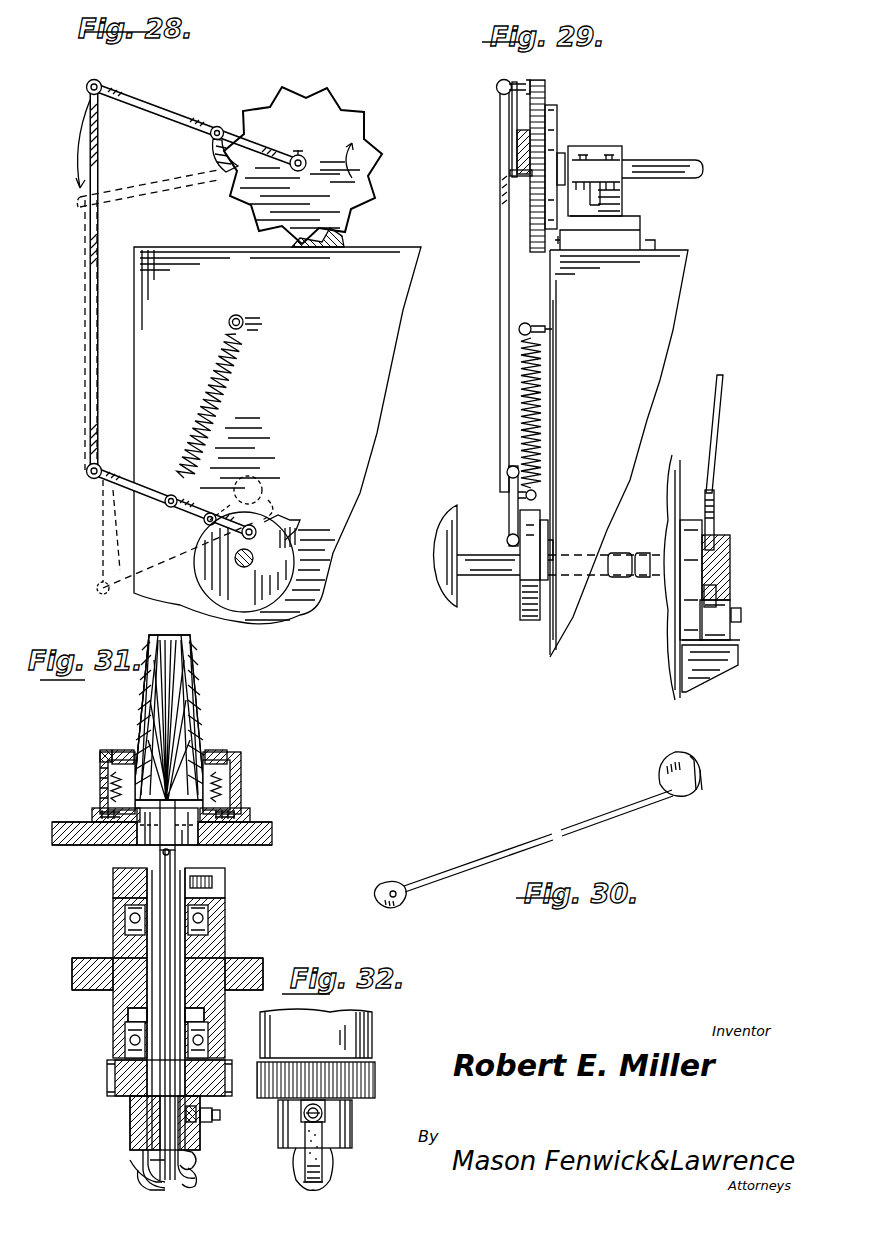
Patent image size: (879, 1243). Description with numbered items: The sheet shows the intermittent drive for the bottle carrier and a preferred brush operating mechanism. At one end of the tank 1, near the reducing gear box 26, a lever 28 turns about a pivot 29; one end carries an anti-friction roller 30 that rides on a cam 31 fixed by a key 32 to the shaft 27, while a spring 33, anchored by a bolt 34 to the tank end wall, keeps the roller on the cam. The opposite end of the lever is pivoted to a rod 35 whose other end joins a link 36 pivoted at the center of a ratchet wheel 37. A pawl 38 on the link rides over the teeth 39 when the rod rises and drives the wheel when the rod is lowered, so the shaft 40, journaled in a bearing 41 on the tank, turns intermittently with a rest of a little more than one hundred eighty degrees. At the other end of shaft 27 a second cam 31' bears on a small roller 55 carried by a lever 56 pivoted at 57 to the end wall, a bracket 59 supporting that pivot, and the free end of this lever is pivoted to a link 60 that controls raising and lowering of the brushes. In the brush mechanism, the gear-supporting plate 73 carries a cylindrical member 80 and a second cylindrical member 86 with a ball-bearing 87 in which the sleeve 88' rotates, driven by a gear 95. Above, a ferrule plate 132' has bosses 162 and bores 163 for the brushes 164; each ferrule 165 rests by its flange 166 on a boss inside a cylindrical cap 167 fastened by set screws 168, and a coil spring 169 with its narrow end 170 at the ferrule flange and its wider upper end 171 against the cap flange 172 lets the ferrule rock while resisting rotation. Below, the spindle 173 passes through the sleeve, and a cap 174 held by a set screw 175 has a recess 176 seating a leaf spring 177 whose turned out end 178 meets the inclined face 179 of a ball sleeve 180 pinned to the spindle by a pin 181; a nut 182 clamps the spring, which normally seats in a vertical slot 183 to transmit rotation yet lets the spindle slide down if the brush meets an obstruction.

In FIG. 28, the tank 1 is at (204, 250).
In FIG. 29, the tank 1 is at (682, 255).
In FIG. 29, the box 26 is at (446, 518).
In FIG. 28, the shaft 27 is at (235, 560).
In FIG. 29, the shaft 27 is at (488, 578).
In FIG. 30, the shaft 27 is at (494, 854).
In FIG. 28, the lever 28 is at (132, 487).
In FIG. 29, the lever 28 is at (508, 495).
In FIG. 28, the pivot 29 is at (214, 513).
In FIG. 28, the anti-friction roller 30 is at (264, 488).
In FIG. 28, the cam 31 is at (298, 522).
In FIG. 29, the cam 31 is at (523, 576).
In FIG. 30, the cam 31 is at (387, 882).
In FIG. 29, the cam 31' is at (712, 577).
In FIG. 30, the cam 31' is at (687, 754).
In FIG. 28, the key 32 is at (236, 578).
In FIG. 28, the spring 33 is at (207, 386).
In FIG. 29, the spring 33 is at (545, 383).
In FIG. 28, the bolt 34 is at (229, 324).
In FIG. 29, the bolt 34 is at (528, 323).
In FIG. 28, the rod 35 is at (93, 301).
In FIG. 29, the rod 35 is at (500, 205).
In FIG. 28, the link 36 is at (198, 112).
In FIG. 29, the link 36 is at (520, 82).
In FIG. 28, the ratchet wheel 37 is at (346, 115).
In FIG. 29, the ratchet wheel 37 is at (548, 90).
In FIG. 28, the pawl 38 is at (215, 160).
In FIG. 29, the pawl 38 is at (518, 153).
In FIG. 28, the teeth 39 is at (367, 150).
In FIG. 29, the shaft 40 is at (672, 163).
In FIG. 28, the bearing 41 is at (349, 244).
In FIG. 29, the bearing 41 is at (598, 168).
In FIG. 29, the small roller 55 is at (731, 608).
In FIG. 29, the lever 56 is at (717, 590).
In FIG. 29, the pivot 57 is at (742, 618).
In FIG. 29, the bracket 59 is at (739, 656).
In FIG. 29, the link 60 is at (715, 442).
In FIG. 31, the gear-supporting plate 73 is at (85, 962).
In FIG. 31, the cylindrical member 80 is at (114, 920).
In FIG. 31, the second cylindrical member 86 is at (113, 1002).
In FIG. 32, the second cylindrical member 86 is at (372, 1025).
In FIG. 31, the ball-bearing 87 is at (126, 1044).
In FIG. 31, the sleeve 88' is at (138, 1106).
In FIG. 31, the gear 95 is at (115, 1078).
In FIG. 32, the gear 95 is at (375, 1068).
In FIG. 31, the ferrule plate 132' is at (183, 834).
In FIG. 31, the cylindrical boss 162 is at (102, 814).
In FIG. 31, the bore 163 is at (183, 840).
In FIG. 31, the brush 164 is at (180, 708).
In FIG. 31, the ferrule 165 is at (144, 702).
In FIG. 31, the flange 166 is at (210, 754).
In FIG. 31, the cylindrical cap 167 is at (241, 786).
In FIG. 31, the set screw 168 is at (222, 822).
In FIG. 31, the coil spring 169 is at (230, 775).
In FIG. 31, the narrow end 170 is at (108, 782).
In FIG. 31, the wider upper end 171 is at (102, 764).
In FIG. 31, the flange 172 is at (112, 756).
In FIG. 31, the spindle 173 is at (160, 853).
In FIG. 31, the cap 174 is at (130, 1120).
In FIG. 32, the cap 174 is at (350, 1114).
In FIG. 31, the set screw 175 is at (213, 1114).
In FIG. 32, the set screw 175 is at (322, 1118).
In FIG. 32, the recess 176 is at (303, 1140).
In FIG. 31, the leaf spring 177 is at (198, 1155).
In FIG. 31, the turned out end 178 is at (196, 1184).
In FIG. 32, the inclined face 179 is at (333, 1170).
In FIG. 31, the ball sleeve 180 is at (140, 1182).
In FIG. 31, the pin 181 is at (146, 1160).
In FIG. 31, the nut 182 is at (198, 1122).
In FIG. 32, the nut 182 is at (302, 1113).
In FIG. 31, the vertical slot 183 is at (195, 1160).
In FIG. 32, the vertical slot 183 is at (305, 1186).